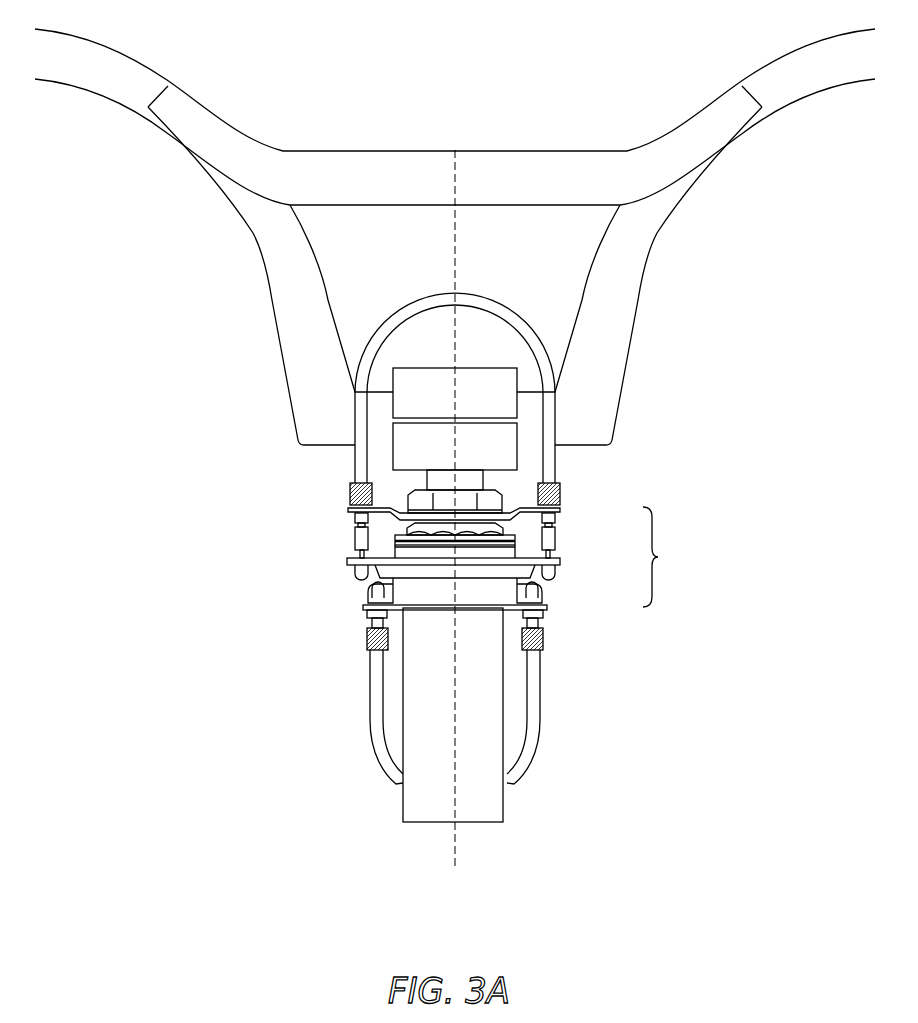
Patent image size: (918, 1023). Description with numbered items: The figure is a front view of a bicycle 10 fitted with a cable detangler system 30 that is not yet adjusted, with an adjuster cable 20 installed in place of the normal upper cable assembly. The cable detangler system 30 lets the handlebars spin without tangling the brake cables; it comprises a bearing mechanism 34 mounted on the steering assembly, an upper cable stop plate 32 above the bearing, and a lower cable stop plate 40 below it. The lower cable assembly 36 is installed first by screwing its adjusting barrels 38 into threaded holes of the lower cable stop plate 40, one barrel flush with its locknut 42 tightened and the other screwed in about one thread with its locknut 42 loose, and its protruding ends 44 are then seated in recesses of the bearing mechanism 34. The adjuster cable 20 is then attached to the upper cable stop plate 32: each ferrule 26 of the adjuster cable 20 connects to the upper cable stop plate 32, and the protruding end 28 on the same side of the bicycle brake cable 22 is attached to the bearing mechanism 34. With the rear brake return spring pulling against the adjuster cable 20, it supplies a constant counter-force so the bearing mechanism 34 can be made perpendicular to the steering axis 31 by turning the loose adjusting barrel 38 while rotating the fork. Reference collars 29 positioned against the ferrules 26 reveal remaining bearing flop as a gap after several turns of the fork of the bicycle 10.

The bicycle 10 is at (443, 76).
The adjuster cable 20 is at (512, 306).
The bicycle brake cable 22 is at (556, 546).
The ferrule 26 is at (560, 484).
The protruding end 28 is at (560, 568).
The reference collar 29 is at (555, 524).
The cable detangler system 30 is at (665, 557).
The steering axis 31 is at (455, 858).
The upper cable stop plate 32 is at (350, 512).
The bearing mechanism 34 is at (347, 559).
The lower cable assembly 36 is at (375, 695).
The adjusting barrel 38 is at (543, 636).
The lower cable stop plate 40 is at (365, 606).
The locknut 42 is at (547, 615).
The protruding end 44 is at (540, 586).